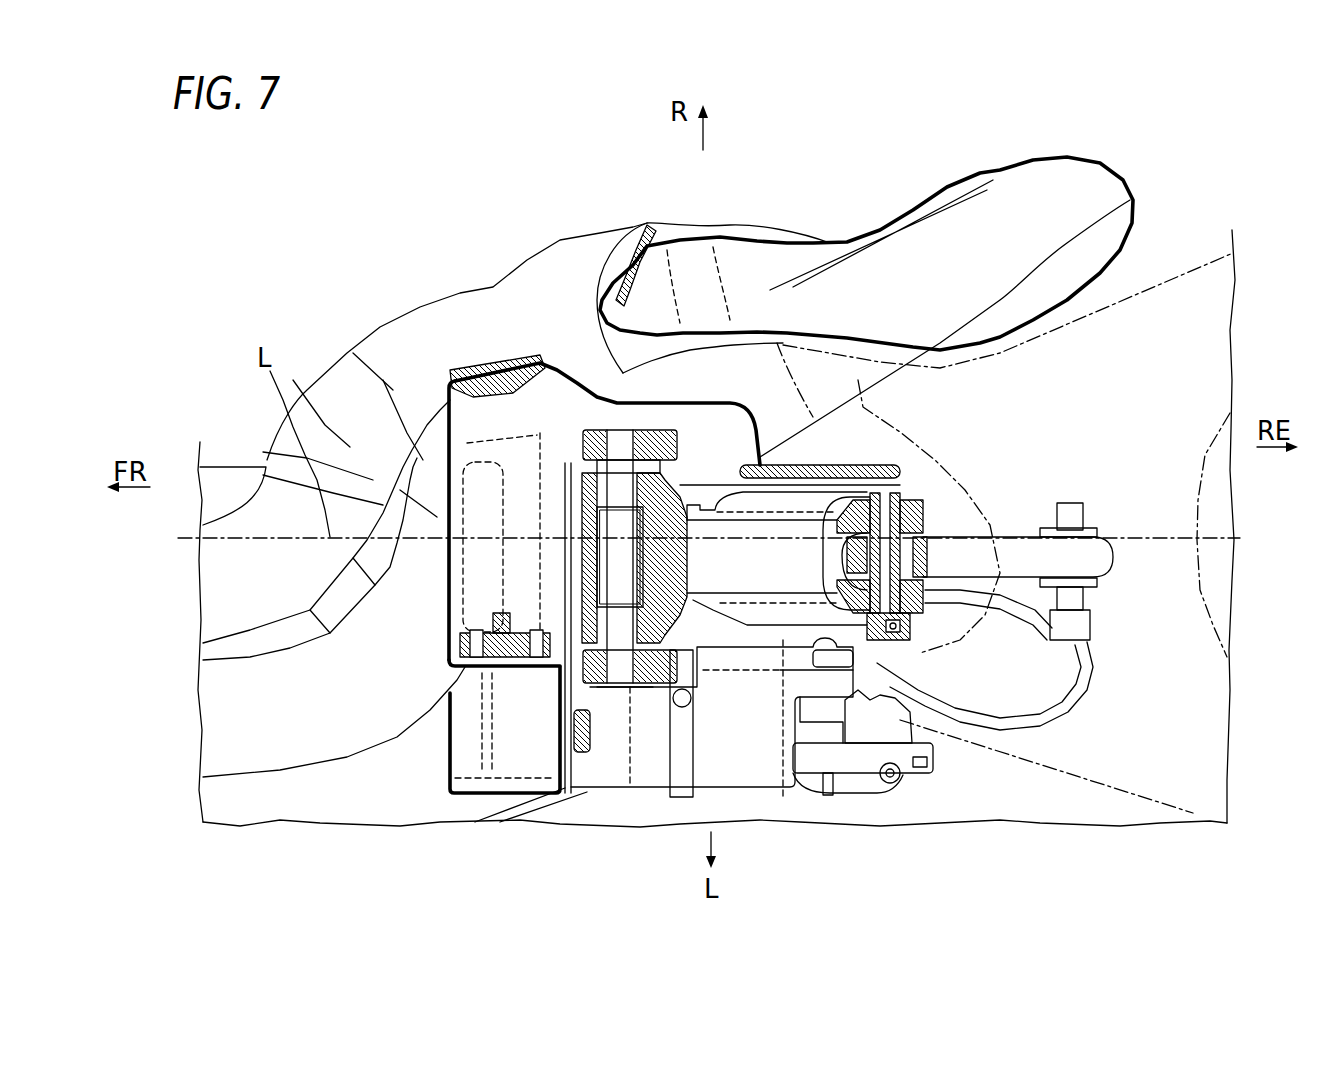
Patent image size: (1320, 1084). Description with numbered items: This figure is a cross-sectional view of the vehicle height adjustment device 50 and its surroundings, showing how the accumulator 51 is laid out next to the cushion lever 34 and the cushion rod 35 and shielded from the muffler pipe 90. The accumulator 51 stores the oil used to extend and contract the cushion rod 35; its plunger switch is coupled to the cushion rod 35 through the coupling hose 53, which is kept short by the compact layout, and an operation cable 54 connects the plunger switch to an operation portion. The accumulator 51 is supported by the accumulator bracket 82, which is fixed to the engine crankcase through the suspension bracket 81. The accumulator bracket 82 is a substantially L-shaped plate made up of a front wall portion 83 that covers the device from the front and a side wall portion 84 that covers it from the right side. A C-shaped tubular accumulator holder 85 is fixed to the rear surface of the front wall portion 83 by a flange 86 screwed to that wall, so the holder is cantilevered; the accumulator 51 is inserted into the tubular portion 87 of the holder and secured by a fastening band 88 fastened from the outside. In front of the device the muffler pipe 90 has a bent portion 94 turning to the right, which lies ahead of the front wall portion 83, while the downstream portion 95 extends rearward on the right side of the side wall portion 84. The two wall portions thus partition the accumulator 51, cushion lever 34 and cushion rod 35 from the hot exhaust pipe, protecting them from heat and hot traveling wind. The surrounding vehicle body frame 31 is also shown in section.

The vehicle body frame 31 is at (1133, 787).
The cushion lever 34 is at (783, 653).
The cushion rod 35 is at (965, 567).
The vehicle height adjustment device 50 is at (880, 828).
The accumulator 51 is at (790, 572).
The coupling hose 53 is at (1063, 700).
The operation cable 54 is at (512, 822).
The suspension bracket 81 is at (455, 305).
The accumulator bracket 82 is at (463, 718).
The front wall portion 83 is at (437, 583).
The side wall portion 84 is at (585, 385).
The accumulator holder 85 is at (647, 763).
The flange 86 is at (578, 776).
The tubular portion 87 is at (730, 757).
The fastening band 88 is at (683, 790).
The muffler pipe 90 is at (490, 257).
The bent portion 94 is at (353, 353).
The downstream portion 95 is at (767, 227).